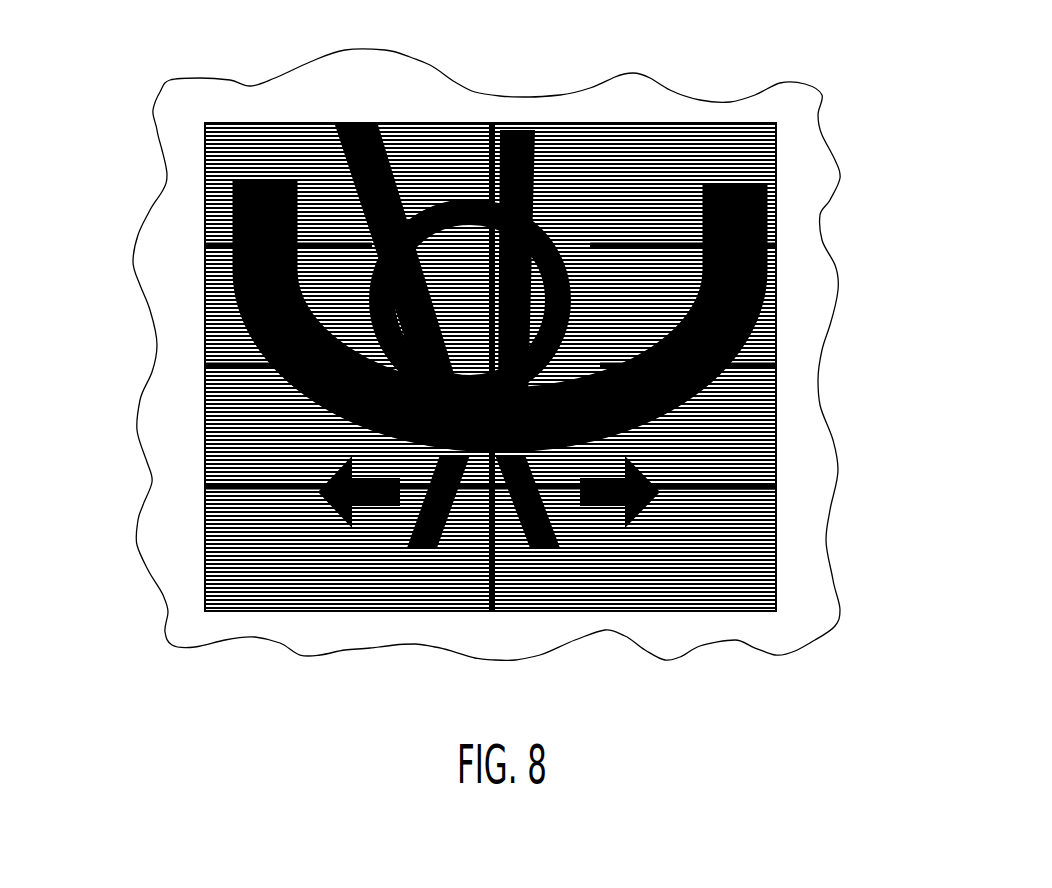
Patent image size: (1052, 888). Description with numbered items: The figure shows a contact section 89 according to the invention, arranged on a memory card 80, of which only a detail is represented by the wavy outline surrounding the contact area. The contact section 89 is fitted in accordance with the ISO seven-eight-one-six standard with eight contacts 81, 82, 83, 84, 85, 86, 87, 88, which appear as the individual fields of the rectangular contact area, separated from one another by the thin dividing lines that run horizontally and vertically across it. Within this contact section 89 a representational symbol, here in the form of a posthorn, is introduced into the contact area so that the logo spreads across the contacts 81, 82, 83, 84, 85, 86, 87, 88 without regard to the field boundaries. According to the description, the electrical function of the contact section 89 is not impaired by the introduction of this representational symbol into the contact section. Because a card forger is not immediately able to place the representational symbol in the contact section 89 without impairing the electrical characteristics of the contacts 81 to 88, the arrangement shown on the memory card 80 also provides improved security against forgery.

The memory card 80 is at (797, 625).
The contact 81 is at (777, 305).
The contact 82 is at (777, 207).
The contact 83 is at (452, 123).
The contact 84 is at (205, 302).
The contact 85 is at (205, 440).
The contact 86 is at (438, 611).
The contact 87 is at (629, 611).
The contact 88 is at (777, 435).
The contact section 89 is at (777, 552).